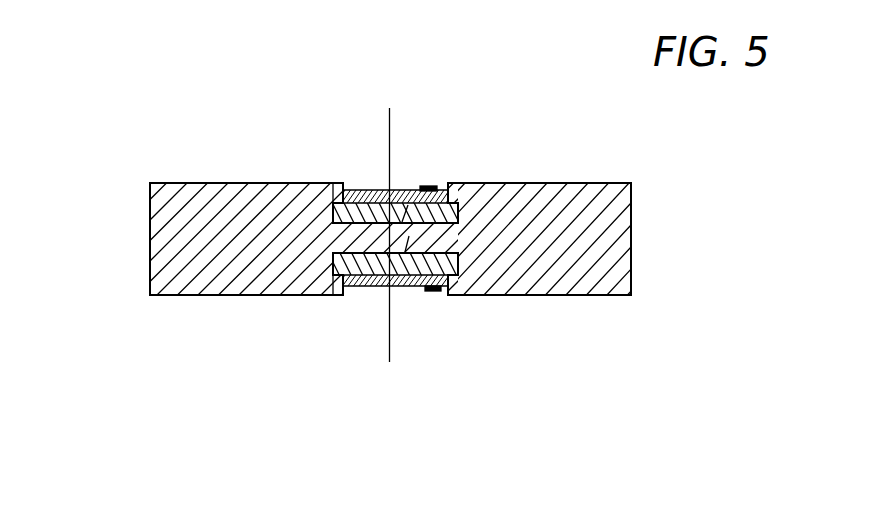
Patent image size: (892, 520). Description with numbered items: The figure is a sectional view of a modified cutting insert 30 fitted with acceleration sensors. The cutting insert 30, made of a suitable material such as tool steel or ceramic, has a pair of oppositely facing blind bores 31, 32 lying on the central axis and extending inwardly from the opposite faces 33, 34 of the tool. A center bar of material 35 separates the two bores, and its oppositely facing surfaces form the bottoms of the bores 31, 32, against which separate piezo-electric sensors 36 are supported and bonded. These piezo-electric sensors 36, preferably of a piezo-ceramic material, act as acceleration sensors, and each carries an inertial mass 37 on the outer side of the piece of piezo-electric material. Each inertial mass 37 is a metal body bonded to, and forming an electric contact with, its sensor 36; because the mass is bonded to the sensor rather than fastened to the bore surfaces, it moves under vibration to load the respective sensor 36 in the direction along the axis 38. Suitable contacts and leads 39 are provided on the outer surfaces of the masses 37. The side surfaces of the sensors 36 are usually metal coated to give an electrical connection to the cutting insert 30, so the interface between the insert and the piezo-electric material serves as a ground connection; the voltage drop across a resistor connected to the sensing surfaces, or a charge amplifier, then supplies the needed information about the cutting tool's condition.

The cutting insert 30 is at (197, 193).
The blind bore 31 is at (338, 185).
The blind bore 32 is at (342, 296).
The face 33 is at (167, 183).
The face 34 is at (180, 296).
The center bar of material 35 is at (406, 253).
The piezo-electric sensor 36 is at (412, 203).
The inertial mass 37 is at (365, 190).
The axis 38 is at (389, 122).
The contacts and leads 39 is at (427, 186).